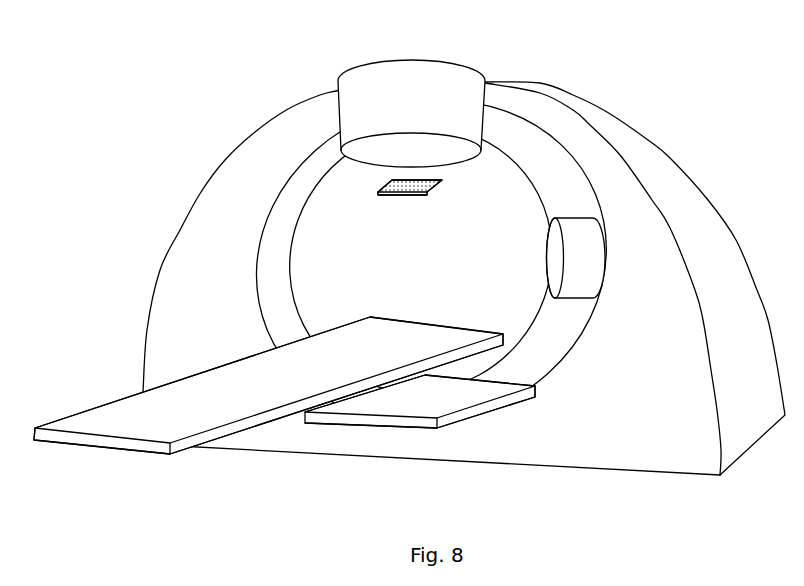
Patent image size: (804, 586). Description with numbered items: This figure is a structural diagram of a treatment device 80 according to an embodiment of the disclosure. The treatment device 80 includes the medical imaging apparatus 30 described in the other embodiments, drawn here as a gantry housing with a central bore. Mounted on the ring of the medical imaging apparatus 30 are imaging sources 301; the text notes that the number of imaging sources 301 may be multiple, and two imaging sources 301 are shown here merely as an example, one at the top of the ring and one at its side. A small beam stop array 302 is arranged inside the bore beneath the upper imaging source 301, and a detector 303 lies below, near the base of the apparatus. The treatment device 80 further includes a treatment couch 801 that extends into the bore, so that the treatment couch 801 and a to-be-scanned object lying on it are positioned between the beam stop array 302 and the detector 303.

The treatment device 80 is at (409, 263).
The medical imaging apparatus 30 is at (540, 84).
The imaging source 301 is at (398, 62).
The beam stop array 302 is at (402, 196).
The detector 303 is at (483, 418).
The treatment couch 801 is at (127, 456).